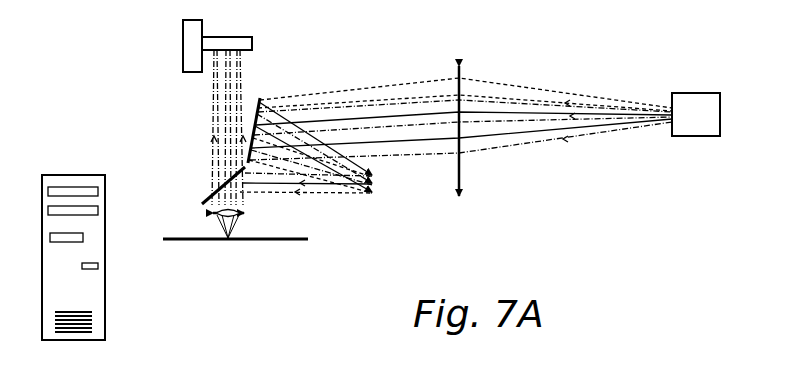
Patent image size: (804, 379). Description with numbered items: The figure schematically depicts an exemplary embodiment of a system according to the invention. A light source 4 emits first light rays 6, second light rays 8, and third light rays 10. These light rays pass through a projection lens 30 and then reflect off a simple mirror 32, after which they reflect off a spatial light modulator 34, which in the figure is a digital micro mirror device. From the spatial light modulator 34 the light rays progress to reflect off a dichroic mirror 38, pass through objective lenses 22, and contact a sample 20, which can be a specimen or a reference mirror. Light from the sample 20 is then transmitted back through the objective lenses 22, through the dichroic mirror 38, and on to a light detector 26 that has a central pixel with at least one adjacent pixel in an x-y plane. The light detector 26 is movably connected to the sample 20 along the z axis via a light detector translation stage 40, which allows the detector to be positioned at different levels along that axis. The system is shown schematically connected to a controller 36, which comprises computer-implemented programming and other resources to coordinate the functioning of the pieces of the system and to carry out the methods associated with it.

The light source 4 is at (690, 136).
The first light rays 6 is at (592, 133).
The second light rays 8 is at (620, 112).
The third light rays 10 is at (525, 88).
The sample 20 is at (270, 241).
The objective lenses 22 is at (212, 213).
The light detector 26 is at (246, 36).
The projection lens 30 is at (459, 62).
The simple mirror 32 is at (263, 99).
The spatial light modulator 34 is at (380, 186).
The controller 36 is at (84, 297).
The dichroic mirror 38 is at (202, 203).
The light detector translation stage 40 is at (183, 45).